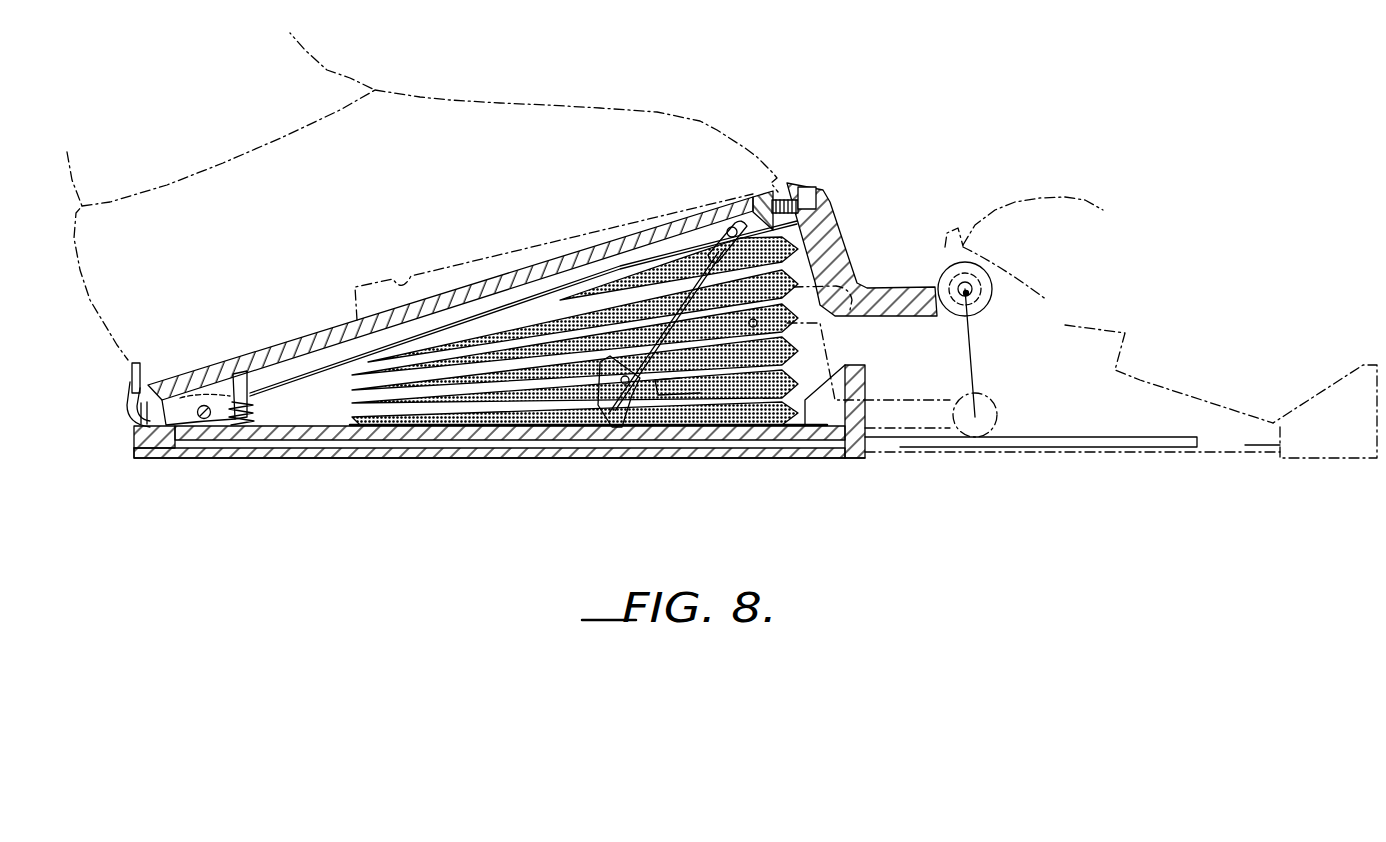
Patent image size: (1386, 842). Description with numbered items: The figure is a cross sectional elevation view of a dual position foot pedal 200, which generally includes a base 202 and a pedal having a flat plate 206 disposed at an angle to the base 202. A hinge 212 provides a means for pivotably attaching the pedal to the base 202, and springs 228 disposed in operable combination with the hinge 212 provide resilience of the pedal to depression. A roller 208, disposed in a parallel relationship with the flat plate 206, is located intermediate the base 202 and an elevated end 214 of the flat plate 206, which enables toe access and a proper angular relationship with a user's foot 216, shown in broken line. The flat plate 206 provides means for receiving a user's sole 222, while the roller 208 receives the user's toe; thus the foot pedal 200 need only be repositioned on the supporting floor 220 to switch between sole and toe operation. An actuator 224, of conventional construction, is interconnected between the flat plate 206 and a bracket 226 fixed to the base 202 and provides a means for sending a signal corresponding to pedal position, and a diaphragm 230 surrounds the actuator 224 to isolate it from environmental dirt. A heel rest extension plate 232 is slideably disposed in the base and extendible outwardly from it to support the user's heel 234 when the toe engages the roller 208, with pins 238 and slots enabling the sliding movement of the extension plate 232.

The dual position foot pedal 200 is at (722, 321).
The base 202 is at (840, 459).
The flat plate 206 is at (632, 235).
The roller 208 is at (983, 306).
The hinge 212 is at (172, 426).
The elevated end 214 is at (802, 186).
The user's foot 216 is at (552, 106).
The supporting floor 220 is at (560, 495).
The user's sole 222 is at (412, 272).
The actuator 224 is at (945, 252).
The bracket 226 is at (628, 430).
The springs 228 is at (258, 412).
The diaphragm 230 is at (400, 402).
The heel rest extension plate 232 is at (1213, 456).
The heel 234 is at (128, 364).
The pins 238 is at (130, 390).